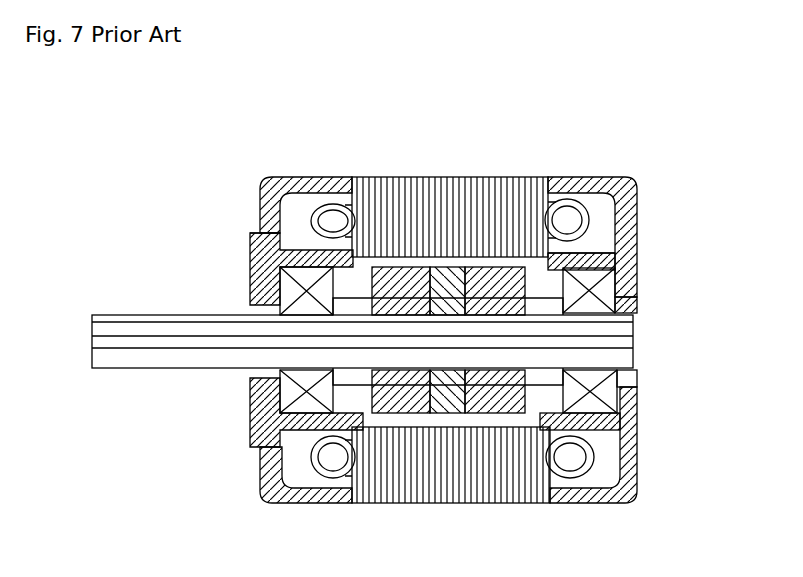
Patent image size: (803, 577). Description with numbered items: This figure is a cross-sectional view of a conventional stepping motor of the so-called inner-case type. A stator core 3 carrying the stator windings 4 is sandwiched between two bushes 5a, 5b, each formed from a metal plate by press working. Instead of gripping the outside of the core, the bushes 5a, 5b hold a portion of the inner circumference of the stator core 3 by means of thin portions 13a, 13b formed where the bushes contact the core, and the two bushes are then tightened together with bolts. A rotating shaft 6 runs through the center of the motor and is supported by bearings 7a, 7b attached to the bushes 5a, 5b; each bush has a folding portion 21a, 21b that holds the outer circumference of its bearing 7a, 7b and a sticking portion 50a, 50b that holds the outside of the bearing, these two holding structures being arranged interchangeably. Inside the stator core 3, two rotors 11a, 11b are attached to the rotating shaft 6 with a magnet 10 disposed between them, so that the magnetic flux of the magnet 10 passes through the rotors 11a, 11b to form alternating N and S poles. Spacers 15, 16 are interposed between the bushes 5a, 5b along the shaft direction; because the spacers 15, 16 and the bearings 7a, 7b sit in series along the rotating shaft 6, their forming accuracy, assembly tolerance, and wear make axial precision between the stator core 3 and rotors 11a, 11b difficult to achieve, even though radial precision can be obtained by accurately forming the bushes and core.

The stator core 3 is at (405, 190).
The stator coil 4 is at (300, 212).
The bush 5a is at (282, 185).
The bush 5b is at (625, 452).
The rotating shaft 6 is at (117, 332).
The bearing 7a is at (262, 295).
The bearing 7b is at (637, 288).
The magnet 10 is at (458, 285).
The rotor 11a is at (338, 190).
The rotor 11b is at (590, 210).
The thin portion 13a is at (368, 192).
The thin portion 13b is at (547, 257).
The spacer 15 is at (638, 400).
The spacer 16 is at (305, 428).
The folding portion 21a is at (262, 225).
The folding portion 21b is at (636, 205).
The sticking portion 50a is at (252, 287).
The sticking portion 50b is at (626, 270).